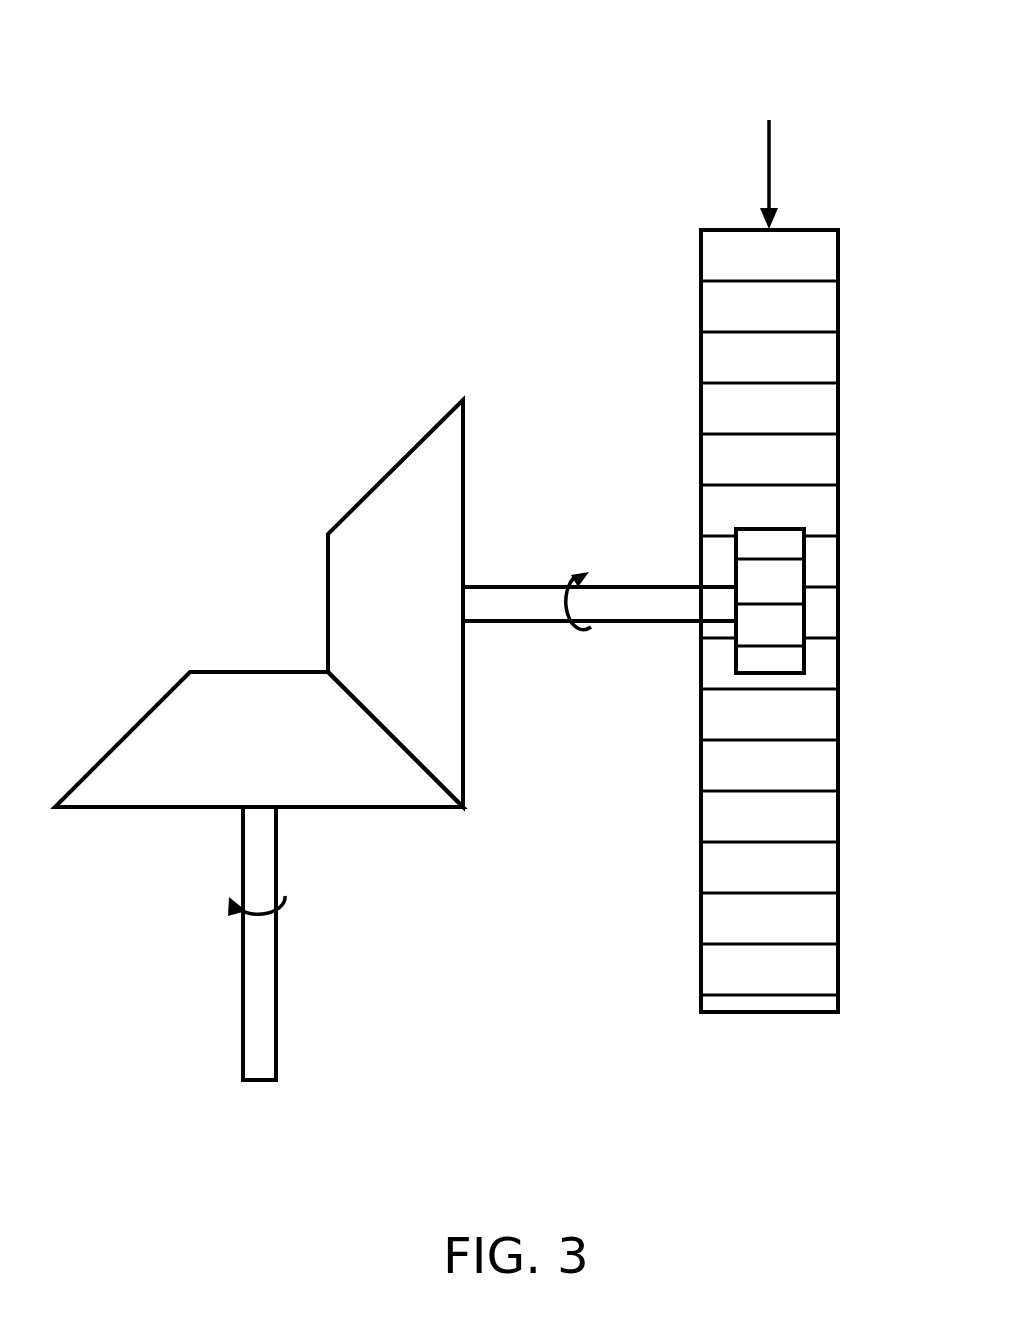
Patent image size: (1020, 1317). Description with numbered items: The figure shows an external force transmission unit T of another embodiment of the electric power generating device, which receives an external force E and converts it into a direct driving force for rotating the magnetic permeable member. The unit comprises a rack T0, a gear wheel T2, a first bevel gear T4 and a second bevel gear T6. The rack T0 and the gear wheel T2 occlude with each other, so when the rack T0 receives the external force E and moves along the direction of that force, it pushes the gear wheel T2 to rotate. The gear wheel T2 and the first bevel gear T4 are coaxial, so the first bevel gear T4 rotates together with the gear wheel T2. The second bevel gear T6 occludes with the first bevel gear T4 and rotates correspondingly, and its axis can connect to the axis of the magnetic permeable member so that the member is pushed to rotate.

The external force transmission unit T is at (497, 102).
The external force E is at (768, 151).
The rack T0 is at (827, 394).
The gear wheel T2 is at (793, 597).
The first bevel gear T4 is at (437, 474).
The second bevel gear T6 is at (352, 793).